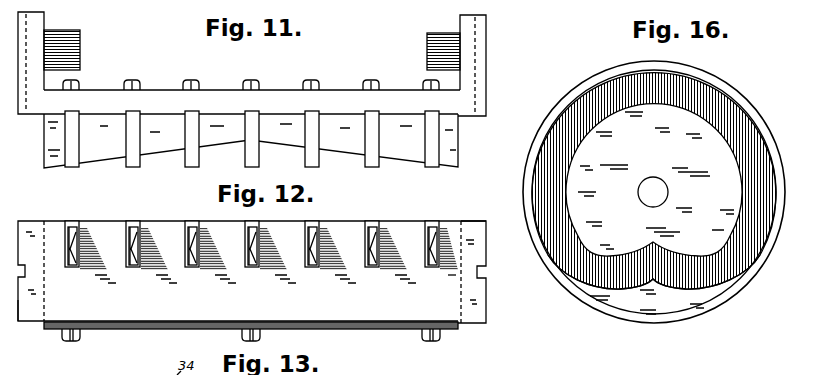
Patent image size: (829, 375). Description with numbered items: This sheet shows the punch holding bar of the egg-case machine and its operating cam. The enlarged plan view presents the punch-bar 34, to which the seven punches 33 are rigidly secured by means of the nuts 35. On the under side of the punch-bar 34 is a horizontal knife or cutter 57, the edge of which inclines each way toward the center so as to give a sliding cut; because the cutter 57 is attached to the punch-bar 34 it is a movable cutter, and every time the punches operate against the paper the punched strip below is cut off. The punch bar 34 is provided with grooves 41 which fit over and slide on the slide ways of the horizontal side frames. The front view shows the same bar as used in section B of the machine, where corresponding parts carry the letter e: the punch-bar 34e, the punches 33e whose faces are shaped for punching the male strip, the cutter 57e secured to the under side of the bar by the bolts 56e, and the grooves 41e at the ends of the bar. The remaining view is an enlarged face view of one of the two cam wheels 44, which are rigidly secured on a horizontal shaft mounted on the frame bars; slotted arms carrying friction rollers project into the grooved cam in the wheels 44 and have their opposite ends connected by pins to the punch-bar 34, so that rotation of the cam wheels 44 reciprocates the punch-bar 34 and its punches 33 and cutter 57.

In FIG. 11, the punches 33 is at (79, 166).
In FIG. 11, the punch-bar 34 is at (159, 97).
In FIG. 11, the nuts 35 is at (253, 82).
In FIG. 11, the horizontal knife or cutter 57 is at (233, 140).
In FIG. 11, the grooves 41 is at (252, 64).
In FIG. 12, the grooves 41 is at (31, 335).
In FIG. 12, the grooves 41e is at (22, 263).
In FIG. 12, the punch-bar 34e is at (95, 237).
In FIG. 12, the punches 33e is at (192, 250).
In FIG. 12, the horizontal knife or cutter 57e is at (347, 330).
In FIG. 12, the bolts 56e is at (80, 341).
In FIG. 16, the cam wheels 44 is at (552, 108).